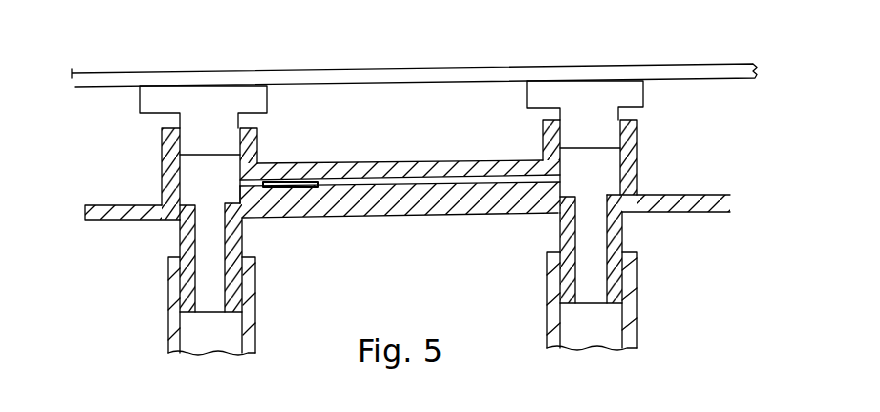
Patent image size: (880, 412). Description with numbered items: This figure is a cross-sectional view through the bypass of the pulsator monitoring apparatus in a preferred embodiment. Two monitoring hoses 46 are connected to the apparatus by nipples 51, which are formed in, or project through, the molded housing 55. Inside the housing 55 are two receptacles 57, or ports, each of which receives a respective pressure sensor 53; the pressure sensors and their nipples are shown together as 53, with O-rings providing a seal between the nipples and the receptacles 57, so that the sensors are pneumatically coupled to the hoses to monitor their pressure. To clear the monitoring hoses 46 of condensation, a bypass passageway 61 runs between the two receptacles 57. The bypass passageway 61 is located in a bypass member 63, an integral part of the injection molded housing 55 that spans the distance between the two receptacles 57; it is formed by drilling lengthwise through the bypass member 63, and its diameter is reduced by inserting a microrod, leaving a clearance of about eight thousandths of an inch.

The monitoring hose 46 is at (168, 345).
The nipple 51 is at (188, 280).
The pressure sensor 53 is at (208, 100).
The housing 55 is at (395, 207).
The receptacle 57 is at (162, 156).
The bypass passageway 61 is at (347, 182).
The bypass member 63 is at (465, 168).